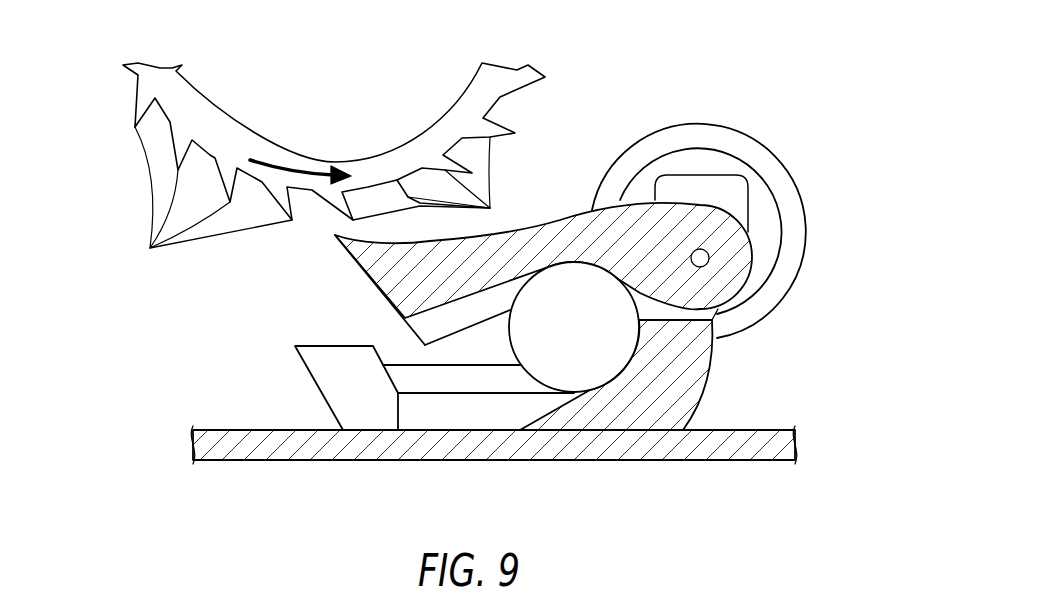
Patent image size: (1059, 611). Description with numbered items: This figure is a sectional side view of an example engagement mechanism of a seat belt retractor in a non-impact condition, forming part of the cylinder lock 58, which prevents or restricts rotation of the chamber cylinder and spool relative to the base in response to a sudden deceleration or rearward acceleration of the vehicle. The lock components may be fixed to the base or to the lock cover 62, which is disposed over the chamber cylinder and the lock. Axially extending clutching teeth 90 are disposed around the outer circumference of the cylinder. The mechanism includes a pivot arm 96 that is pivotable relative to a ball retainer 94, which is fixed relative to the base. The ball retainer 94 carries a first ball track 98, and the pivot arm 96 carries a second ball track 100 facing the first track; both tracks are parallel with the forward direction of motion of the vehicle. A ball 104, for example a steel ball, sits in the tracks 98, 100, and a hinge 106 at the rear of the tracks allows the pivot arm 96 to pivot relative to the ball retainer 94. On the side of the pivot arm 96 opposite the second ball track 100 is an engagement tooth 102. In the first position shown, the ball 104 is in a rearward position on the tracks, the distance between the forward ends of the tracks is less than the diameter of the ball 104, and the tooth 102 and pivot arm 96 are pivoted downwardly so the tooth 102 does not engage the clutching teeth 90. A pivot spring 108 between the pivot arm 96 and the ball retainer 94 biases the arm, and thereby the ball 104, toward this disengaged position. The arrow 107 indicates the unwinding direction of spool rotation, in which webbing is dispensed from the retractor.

The cylinder lock 58 is at (546, 235).
The lock cover 62 is at (735, 461).
The clutching teeth 90 is at (328, 164).
The ball retainer 94 is at (324, 400).
The pivot arm 96 is at (557, 217).
The first ball track 98 is at (398, 386).
The second ball track 100 is at (408, 318).
The engagement tooth 102 is at (333, 237).
The ball 104 is at (633, 357).
The hinge 106 is at (709, 260).
The arrow 107 is at (288, 168).
The pivot spring 108 is at (772, 156).